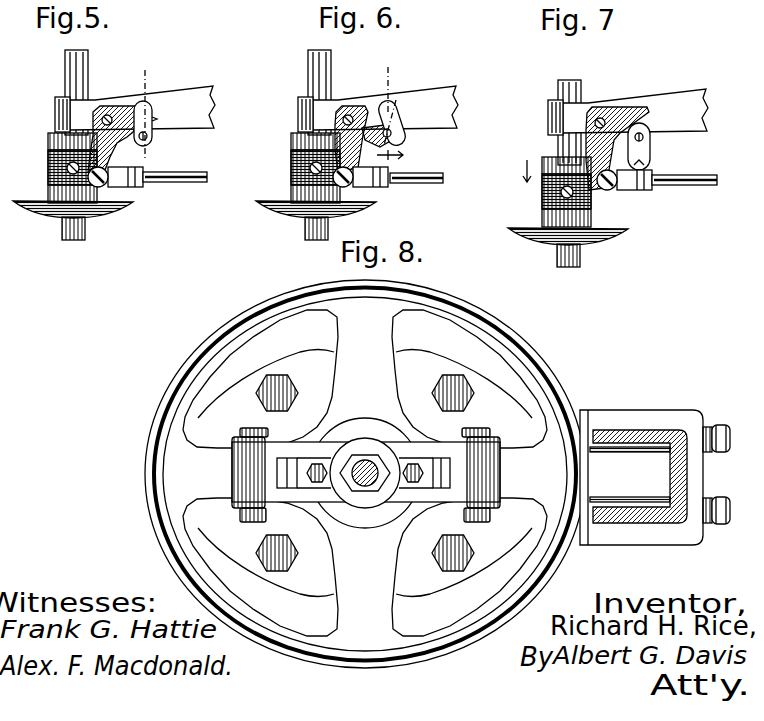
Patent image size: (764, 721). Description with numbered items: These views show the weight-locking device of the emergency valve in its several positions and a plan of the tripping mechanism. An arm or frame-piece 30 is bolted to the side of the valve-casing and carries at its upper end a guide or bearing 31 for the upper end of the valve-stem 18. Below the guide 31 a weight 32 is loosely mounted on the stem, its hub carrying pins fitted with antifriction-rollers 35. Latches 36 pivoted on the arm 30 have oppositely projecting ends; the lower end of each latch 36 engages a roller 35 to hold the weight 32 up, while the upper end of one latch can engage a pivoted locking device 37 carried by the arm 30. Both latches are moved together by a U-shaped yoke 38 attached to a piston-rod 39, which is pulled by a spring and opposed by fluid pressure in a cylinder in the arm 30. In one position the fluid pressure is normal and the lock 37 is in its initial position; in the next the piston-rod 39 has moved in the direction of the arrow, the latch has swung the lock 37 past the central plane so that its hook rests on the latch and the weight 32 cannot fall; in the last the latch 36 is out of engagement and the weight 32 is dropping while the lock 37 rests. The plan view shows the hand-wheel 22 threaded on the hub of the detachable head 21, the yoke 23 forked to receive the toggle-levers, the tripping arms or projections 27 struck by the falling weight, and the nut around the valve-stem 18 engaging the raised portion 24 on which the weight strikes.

In FIG. 5, the valve-stem 18 is at (65, 75).
In FIG. 6, the valve-stem 18 is at (308, 70).
In FIG. 7, the valve-stem 18 is at (560, 91).
In FIG. 8, the valve-stem 18 is at (365, 484).
In FIG. 8, the detachable head 21 is at (393, 517).
In FIG. 8, the hand-wheel 22 is at (545, 367).
In FIG. 8, the yoke 23 is at (323, 450).
In FIG. 8, the raised portion 24 is at (367, 447).
In FIG. 8, the arm or projection 27 is at (232, 472).
In FIG. 8, the arm or frame-piece 30 is at (645, 432).
In FIG. 5, the guide or bearing 31 is at (55, 115).
In FIG. 6, the guide or bearing 31 is at (298, 113).
In FIG. 7, the guide or bearing 31 is at (548, 115).
In FIG. 5, the weight 32 is at (35, 213).
In FIG. 6, the weight 32 is at (277, 213).
In FIG. 7, the weight 32 is at (527, 233).
In FIG. 5, the antifriction-roller 35 is at (50, 168).
In FIG. 6, the antifriction-roller 35 is at (290, 172).
In FIG. 7, the antifriction-roller 35 is at (543, 190).
In FIG. 5, the latch 36 is at (118, 107).
In FIG. 6, the latch 36 is at (363, 108).
In FIG. 7, the latch 36 is at (613, 109).
In FIG. 5, the locking device 37 is at (141, 107).
In FIG. 6, the locking device 37 is at (398, 106).
In FIG. 7, the locking device 37 is at (645, 150).
In FIG. 5, the U-shaped yoke 38 is at (120, 183).
In FIG. 6, the U-shaped yoke 38 is at (367, 187).
In FIG. 7, the U-shaped yoke 38 is at (630, 189).
In FIG. 5, the piston-rod 39 is at (192, 168).
In FIG. 6, the piston-rod 39 is at (433, 183).
In FIG. 7, the piston-rod 39 is at (697, 184).